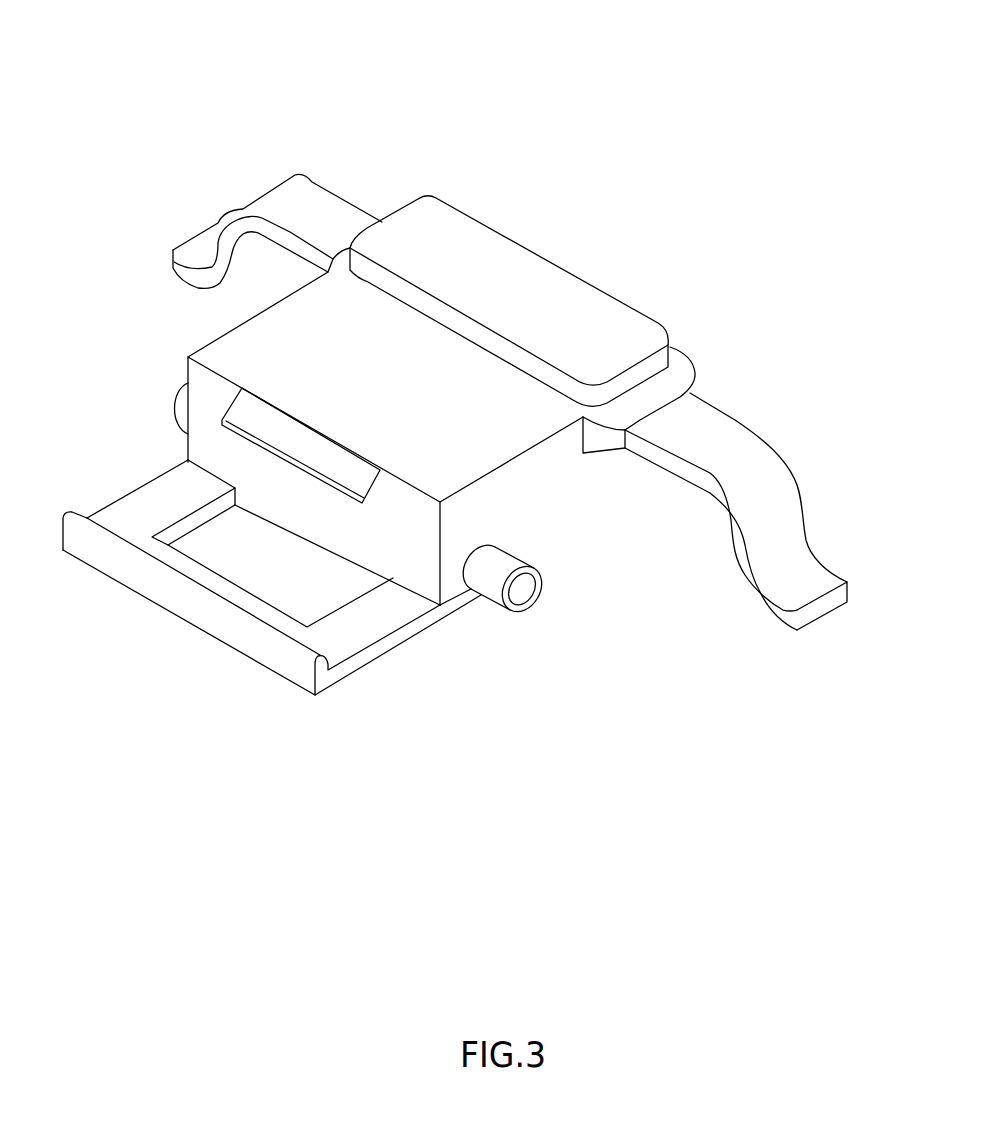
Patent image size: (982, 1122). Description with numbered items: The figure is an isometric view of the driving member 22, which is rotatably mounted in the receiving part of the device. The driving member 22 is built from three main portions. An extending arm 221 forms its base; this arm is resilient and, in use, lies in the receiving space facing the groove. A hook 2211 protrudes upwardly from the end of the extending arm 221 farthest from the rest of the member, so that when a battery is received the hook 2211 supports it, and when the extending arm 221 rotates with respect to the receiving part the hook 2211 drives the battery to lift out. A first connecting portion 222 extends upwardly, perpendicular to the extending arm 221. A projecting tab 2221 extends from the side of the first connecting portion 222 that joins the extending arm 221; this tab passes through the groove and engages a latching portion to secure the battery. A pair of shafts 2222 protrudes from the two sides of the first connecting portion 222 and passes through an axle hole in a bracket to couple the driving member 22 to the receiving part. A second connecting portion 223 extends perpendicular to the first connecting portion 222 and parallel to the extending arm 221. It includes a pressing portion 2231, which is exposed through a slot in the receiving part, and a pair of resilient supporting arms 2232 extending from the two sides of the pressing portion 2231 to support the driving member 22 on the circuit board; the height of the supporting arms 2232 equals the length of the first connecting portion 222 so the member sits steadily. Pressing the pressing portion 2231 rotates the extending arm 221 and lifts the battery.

The driving member 22 is at (273, 68).
The extending arm 221 is at (362, 630).
The hook 2211 is at (193, 603).
The first connecting portion 222 is at (210, 390).
The projecting tab 2221 is at (298, 445).
The shafts 2222 is at (527, 597).
The second connecting portion 223 is at (450, 407).
The pressing portion 2231 is at (507, 274).
The supporting arms 2232 is at (297, 203).